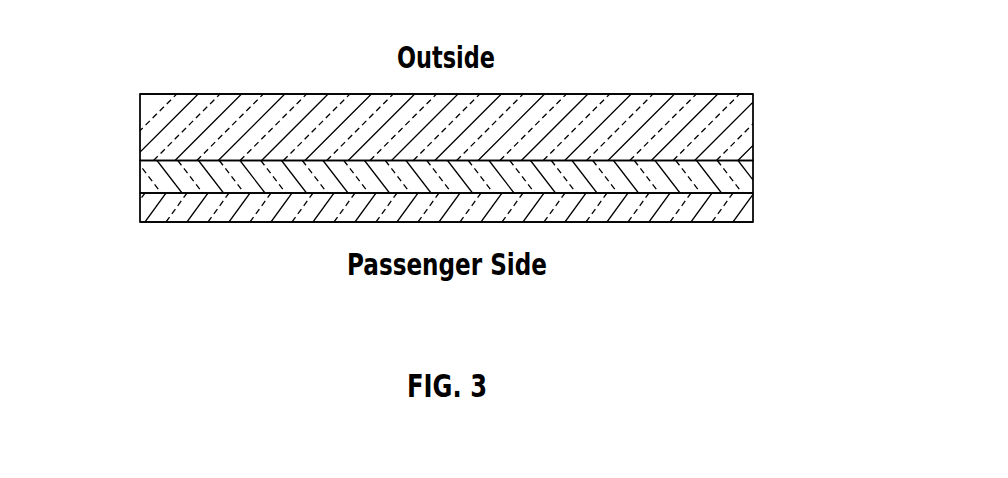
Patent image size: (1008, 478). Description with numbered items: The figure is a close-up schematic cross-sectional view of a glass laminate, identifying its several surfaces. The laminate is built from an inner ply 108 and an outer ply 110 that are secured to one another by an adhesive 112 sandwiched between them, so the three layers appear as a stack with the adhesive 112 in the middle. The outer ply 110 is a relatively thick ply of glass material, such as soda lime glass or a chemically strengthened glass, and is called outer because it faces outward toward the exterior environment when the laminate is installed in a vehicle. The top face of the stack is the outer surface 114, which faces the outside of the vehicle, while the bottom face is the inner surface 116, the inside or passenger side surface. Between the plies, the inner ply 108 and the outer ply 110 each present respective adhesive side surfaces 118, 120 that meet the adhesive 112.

The inner ply 108 is at (140, 210).
The outer ply 110 is at (138, 137).
The adhesive 112 is at (140, 183).
The outer surface 114 is at (740, 93).
The inner surface 116 is at (750, 215).
The adhesive side surface 118 is at (740, 193).
The adhesive side surface 120 is at (733, 158).